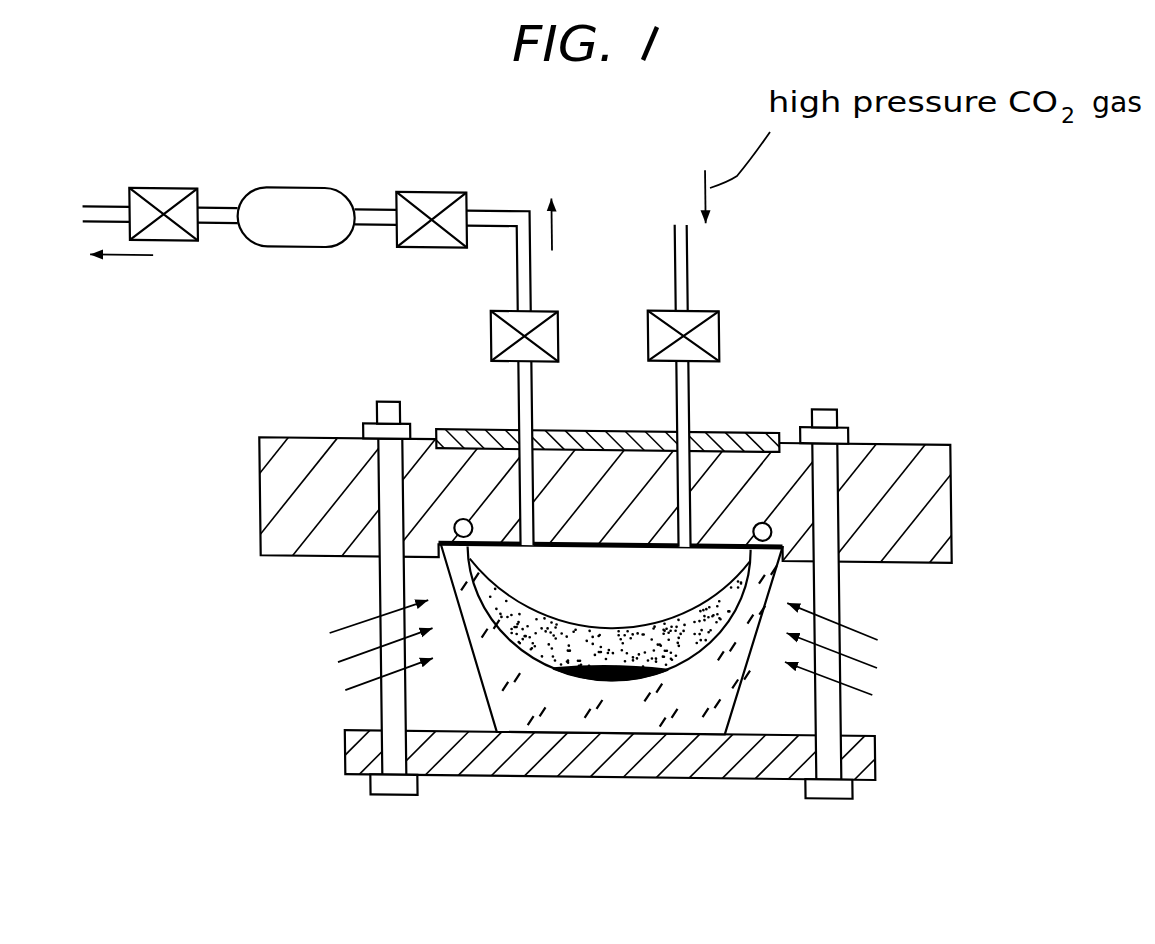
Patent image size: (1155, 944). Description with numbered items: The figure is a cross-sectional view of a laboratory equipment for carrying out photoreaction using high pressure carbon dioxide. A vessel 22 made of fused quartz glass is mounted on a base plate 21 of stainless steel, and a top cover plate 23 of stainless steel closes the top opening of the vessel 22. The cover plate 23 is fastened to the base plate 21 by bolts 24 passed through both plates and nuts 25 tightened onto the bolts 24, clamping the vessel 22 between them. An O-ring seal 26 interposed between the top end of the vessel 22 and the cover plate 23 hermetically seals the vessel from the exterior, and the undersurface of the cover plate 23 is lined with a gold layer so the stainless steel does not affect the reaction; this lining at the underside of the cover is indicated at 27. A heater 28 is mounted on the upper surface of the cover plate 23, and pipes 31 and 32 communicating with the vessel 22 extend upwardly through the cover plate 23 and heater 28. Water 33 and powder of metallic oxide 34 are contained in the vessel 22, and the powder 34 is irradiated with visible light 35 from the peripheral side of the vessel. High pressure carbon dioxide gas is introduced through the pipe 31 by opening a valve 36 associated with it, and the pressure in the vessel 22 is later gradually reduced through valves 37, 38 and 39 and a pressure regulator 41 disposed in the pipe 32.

The base plate 21 is at (472, 777).
The vessel 22 is at (478, 689).
The top cover plate 23 is at (952, 535).
The bolts 24 is at (377, 585).
The nuts 25 is at (366, 427).
The O-ring seal 26 is at (455, 523).
The diaphragm film 27 is at (582, 548).
The heater 28 is at (748, 431).
The pipe 31 is at (695, 271).
The pipe 32 is at (534, 284).
The water 33 is at (611, 682).
The powder of metallic oxide 34 is at (671, 642).
The visible light 35 is at (320, 667).
The valve 36 is at (650, 337).
The valve 37 is at (494, 336).
The valve 38 is at (444, 194).
The valve 39 is at (162, 193).
The pressure regulator 41 is at (294, 192).